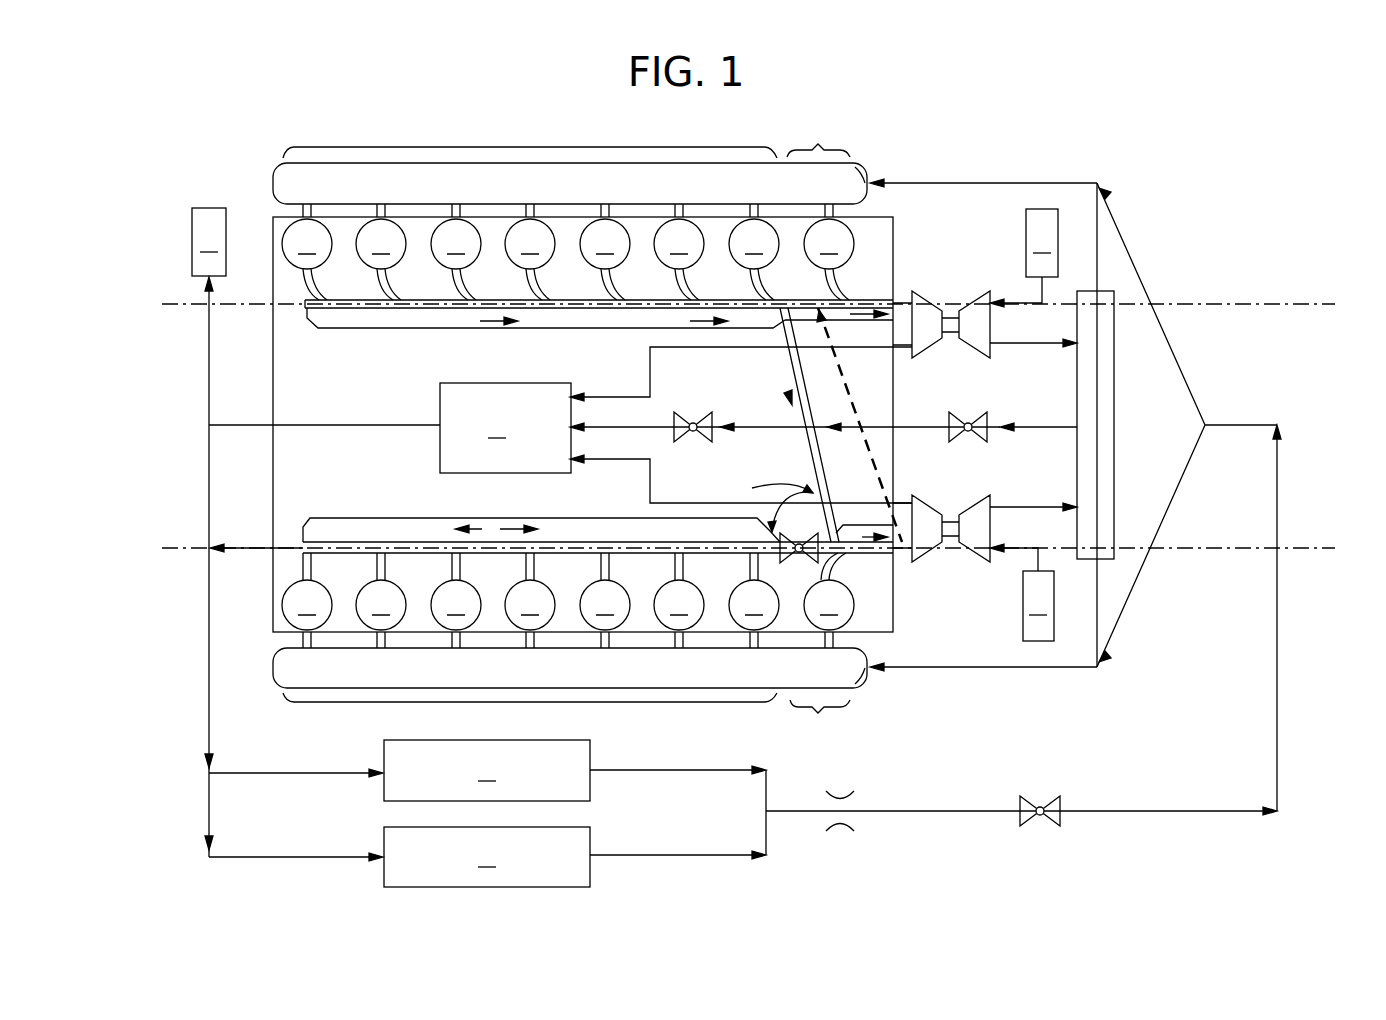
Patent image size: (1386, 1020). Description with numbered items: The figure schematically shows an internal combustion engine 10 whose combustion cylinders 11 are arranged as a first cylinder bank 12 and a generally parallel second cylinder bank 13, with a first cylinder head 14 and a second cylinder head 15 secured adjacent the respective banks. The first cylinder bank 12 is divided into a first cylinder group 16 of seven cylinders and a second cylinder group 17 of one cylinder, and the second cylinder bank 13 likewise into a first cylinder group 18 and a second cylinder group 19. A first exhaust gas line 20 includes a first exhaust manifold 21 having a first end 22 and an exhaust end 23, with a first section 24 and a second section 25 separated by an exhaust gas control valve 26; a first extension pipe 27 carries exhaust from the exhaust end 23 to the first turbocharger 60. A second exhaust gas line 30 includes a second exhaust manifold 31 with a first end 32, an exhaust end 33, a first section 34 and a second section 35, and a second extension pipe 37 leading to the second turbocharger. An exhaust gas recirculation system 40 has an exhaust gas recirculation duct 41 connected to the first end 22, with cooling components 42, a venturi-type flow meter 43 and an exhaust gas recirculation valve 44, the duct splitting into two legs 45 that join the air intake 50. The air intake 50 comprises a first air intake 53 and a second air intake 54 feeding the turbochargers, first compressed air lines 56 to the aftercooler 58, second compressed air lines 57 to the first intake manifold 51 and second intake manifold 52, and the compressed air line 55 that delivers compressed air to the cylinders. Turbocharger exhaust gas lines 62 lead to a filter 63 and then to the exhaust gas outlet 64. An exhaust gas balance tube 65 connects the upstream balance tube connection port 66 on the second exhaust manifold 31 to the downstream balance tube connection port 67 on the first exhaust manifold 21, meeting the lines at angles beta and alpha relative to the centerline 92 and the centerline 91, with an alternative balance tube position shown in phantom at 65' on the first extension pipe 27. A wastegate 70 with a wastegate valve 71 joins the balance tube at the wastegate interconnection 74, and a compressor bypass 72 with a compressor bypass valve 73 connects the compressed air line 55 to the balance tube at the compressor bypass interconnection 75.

The internal combustion engine 10 is at (1124, 168).
The combustion cylinder 11 is at (568, 424).
The first cylinder bank 12 is at (177, 602).
The second cylinder bank 13 is at (212, 190).
The first cylinder head 14 is at (272, 240).
The second cylinder head 15 is at (273, 612).
The first cylinder group 16 is at (491, 702).
The second cylinder group 17 is at (820, 715).
The first cylinder group 18 is at (567, 149).
The second cylinder group 19 is at (818, 138).
The first exhaust gas line 20 is at (318, 556).
The first exhaust manifold 21 is at (340, 548).
The first end 22 is at (300, 533).
The exhaust end 23 is at (893, 585).
The first section 24 is at (555, 519).
The second section 25 is at (880, 530).
The exhaust gas control valve 26 is at (805, 553).
The first extension pipe 27 is at (907, 560).
The second exhaust gas line 30 is at (365, 300).
The second exhaust manifold 31 is at (372, 292).
The first end 32 is at (303, 310).
The exhaust end 33 is at (877, 300).
The first section 34 is at (480, 327).
The second section 35 is at (826, 322).
The second extension pipe 37 is at (903, 293).
The exhaust gas recirculation system 40 is at (190, 812).
The exhaust gas recirculation duct 41 is at (208, 660).
The cooling component 42 is at (575, 813).
The flow meter 43 is at (840, 818).
The exhaust gas recirculation valve 44 is at (1040, 828).
The leg 45 is at (1165, 332).
The air intake 50 is at (1068, 683).
The first intake manifold 51 is at (853, 670).
The second intake manifold 52 is at (860, 160).
The first air intake 53 is at (1022, 592).
The second air intake 54 is at (1024, 258).
The compressed air line 55 is at (1097, 228).
The first compressed air line 56 is at (1020, 345).
The second compressed air line 57 is at (1097, 258).
The aftercooler 58 is at (1116, 432).
The first turbocharger 60 is at (915, 500).
The turbocharger exhaust gas line 62 is at (681, 347).
The filter 63 is at (390, 428).
The exhaust gas outlet 64 is at (209, 249).
The exhaust gas balance tube 65 is at (789, 425).
The exhaust gas balance tube alternative position 65' is at (886, 425).
The upstream balance tube connection port 66 is at (800, 305).
The downstream balance tube connection port 67 is at (814, 596).
The wastegate 70 is at (750, 422).
The wastegate valve 71 is at (688, 412).
The compressor bypass 72 is at (1030, 425).
The compressor bypass valve 73 is at (960, 413).
The wastegate interconnection 74 is at (803, 428).
The compressor bypass interconnection 75 is at (820, 432).
The centerline 91 is at (1314, 545).
The centerline 92 is at (1315, 303).